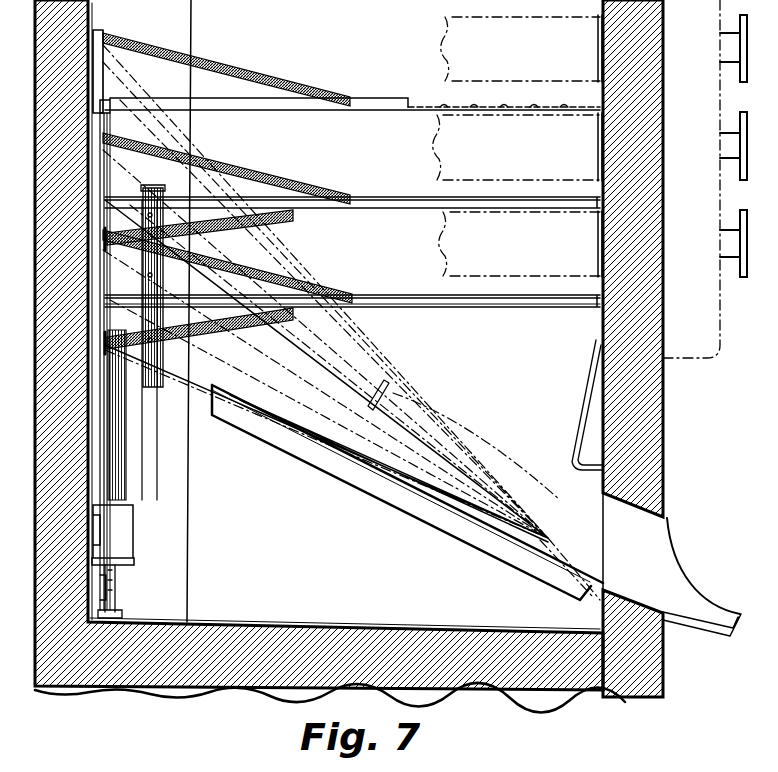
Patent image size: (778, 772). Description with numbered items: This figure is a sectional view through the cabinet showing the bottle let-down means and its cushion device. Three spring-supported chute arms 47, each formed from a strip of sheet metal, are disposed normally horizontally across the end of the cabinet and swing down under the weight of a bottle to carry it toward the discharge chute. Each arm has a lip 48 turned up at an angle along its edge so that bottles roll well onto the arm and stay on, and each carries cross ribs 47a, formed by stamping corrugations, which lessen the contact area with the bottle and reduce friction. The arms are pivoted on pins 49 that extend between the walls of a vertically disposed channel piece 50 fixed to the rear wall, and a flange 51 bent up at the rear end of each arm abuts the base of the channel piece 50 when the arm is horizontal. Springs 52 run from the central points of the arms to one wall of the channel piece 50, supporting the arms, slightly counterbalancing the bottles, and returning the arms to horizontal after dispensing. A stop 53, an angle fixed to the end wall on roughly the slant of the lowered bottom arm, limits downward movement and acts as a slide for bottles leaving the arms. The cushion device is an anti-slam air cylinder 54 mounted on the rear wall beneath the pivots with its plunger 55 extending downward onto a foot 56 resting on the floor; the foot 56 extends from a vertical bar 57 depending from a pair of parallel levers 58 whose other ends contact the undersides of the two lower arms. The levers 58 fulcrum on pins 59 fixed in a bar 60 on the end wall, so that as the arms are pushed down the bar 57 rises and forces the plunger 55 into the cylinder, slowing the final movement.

The chute arms 47 is at (360, 216).
The cross ribs 47a is at (424, 106).
The lip 48 is at (410, 204).
The pins 49 is at (108, 100).
The channel piece 50 is at (98, 65).
The flange 51 is at (100, 90).
The springs 52 is at (283, 190).
The stop 53 is at (395, 492).
The air cylinder 54 is at (120, 535).
The plunger 55 is at (112, 590).
The foot 56 is at (115, 612).
The bar 57 is at (117, 473).
The levers 58 is at (258, 230).
The pins 59 is at (170, 392).
The bar 60 is at (145, 398).